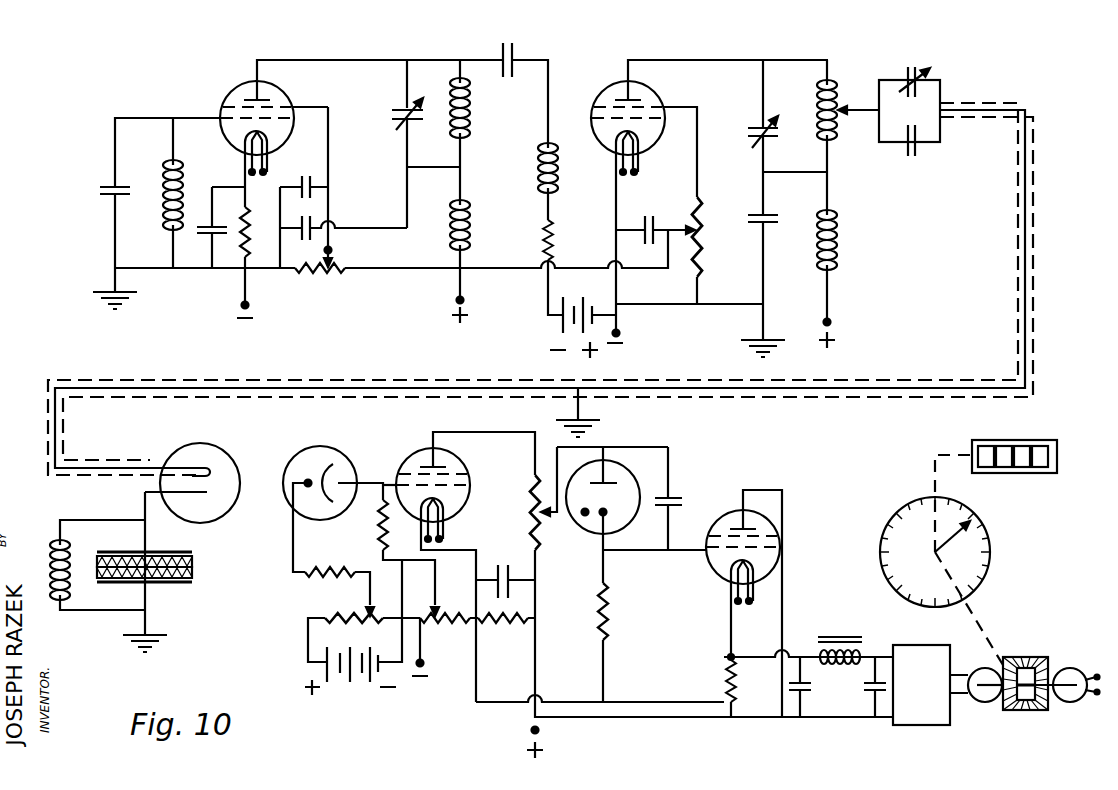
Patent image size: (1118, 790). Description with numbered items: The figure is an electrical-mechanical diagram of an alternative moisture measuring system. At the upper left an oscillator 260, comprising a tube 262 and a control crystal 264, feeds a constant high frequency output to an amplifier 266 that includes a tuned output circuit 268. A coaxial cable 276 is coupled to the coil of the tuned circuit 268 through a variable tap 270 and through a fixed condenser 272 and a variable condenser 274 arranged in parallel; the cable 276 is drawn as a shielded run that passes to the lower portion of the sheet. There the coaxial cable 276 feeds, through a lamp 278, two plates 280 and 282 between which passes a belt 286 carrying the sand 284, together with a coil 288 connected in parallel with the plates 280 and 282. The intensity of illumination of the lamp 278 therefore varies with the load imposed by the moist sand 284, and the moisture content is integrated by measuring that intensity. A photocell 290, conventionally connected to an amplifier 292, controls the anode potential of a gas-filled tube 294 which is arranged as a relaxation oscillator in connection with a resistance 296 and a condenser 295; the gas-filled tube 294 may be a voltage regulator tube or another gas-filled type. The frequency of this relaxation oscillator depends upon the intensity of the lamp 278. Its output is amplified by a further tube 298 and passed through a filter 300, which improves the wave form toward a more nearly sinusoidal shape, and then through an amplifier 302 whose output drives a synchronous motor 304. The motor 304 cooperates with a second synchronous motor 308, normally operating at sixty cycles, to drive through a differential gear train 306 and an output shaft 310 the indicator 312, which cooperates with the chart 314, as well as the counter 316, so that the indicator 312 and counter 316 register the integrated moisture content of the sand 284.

The oscillator 260 is at (350, 44).
The tube 262 is at (227, 94).
The control crystal 264 is at (106, 195).
The amplifier 266 is at (603, 80).
The tuned output circuit 268 is at (818, 44).
The variable tap 270 is at (848, 112).
The fixed condenser 272 is at (906, 78).
The variable condenser 274 is at (919, 157).
The coaxial cable 276 is at (1012, 282).
The lamp 278 is at (173, 449).
The plate 280 is at (172, 552).
The plate 282 is at (172, 584).
The sand 284 is at (192, 562).
The belt 286 is at (192, 574).
The coil 288 is at (52, 545).
The photocell 290 is at (309, 450).
The amplifier 292 is at (419, 450).
The gas-filled tube 294 is at (626, 461).
The condenser 295 is at (683, 497).
The resistance 296 is at (612, 600).
The amplifier tube 298 is at (712, 522).
The filter 300 is at (826, 632).
The amplifier 302 is at (930, 645).
The synchronous motor 304 is at (997, 667).
The differential gear train 306 is at (1012, 655).
The synchronous motor 308 is at (1068, 668).
The output shaft 310 is at (990, 636).
The indicator 312 is at (958, 542).
The chart 314 is at (906, 511).
The counter 316 is at (998, 440).